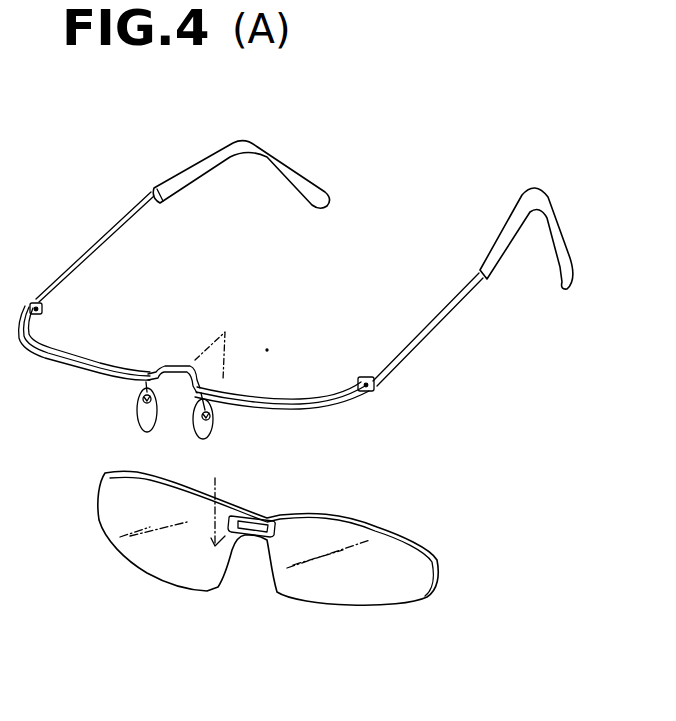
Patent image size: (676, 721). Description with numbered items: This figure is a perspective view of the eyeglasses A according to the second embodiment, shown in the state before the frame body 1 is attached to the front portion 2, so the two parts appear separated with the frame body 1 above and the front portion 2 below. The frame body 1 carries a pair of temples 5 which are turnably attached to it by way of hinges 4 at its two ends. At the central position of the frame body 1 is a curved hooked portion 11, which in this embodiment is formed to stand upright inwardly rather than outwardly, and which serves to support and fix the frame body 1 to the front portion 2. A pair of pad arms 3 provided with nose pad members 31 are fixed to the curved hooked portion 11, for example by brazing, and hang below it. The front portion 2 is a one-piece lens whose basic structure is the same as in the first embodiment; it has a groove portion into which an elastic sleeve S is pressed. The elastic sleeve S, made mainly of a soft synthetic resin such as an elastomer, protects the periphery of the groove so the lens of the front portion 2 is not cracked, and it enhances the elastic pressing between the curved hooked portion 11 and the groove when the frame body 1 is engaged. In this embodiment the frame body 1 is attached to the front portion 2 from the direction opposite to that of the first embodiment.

The eyeglasses A is at (373, 177).
The frame body 1 is at (80, 368).
The curved hooked portion 11 is at (177, 370).
The front portion 2 is at (332, 600).
The pad arms 3 is at (217, 413).
The nose pad members 31 is at (135, 417).
The hinges 4 is at (362, 382).
The temples 5 is at (417, 353).
The elastic sleeve S is at (273, 515).